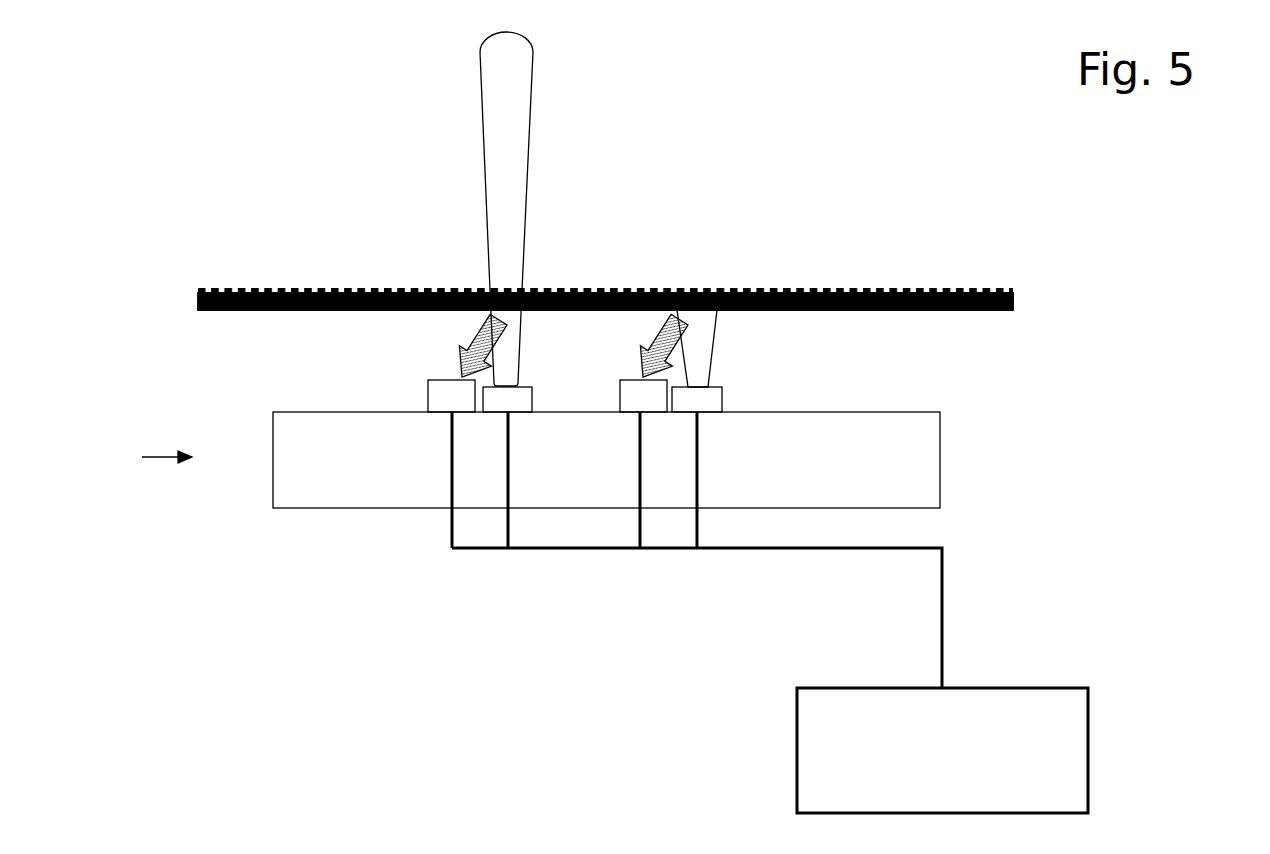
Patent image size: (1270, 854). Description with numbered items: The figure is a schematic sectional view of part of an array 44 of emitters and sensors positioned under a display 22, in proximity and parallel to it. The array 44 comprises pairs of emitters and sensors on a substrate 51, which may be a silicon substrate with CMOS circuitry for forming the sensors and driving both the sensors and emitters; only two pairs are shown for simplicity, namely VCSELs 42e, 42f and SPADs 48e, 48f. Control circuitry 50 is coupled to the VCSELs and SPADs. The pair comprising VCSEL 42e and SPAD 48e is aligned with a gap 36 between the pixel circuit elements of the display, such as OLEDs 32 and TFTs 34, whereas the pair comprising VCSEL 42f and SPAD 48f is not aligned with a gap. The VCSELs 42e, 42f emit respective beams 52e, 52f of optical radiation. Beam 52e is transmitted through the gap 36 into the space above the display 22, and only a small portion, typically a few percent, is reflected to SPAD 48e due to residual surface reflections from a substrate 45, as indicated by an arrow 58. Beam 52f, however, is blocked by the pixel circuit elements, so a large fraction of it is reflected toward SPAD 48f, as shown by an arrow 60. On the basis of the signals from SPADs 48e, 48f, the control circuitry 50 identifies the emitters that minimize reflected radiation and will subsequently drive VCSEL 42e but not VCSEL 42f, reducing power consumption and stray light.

The display 22 is at (1040, 288).
The OLEDs 32 is at (310, 283).
The TFTs 34 is at (655, 283).
The gap 36 is at (538, 290).
The substrate 45 is at (983, 310).
The array 44 is at (142, 458).
The substrate 51 is at (918, 458).
The control circuitry 50 is at (1058, 733).
The beam 52e is at (508, 210).
The beam 52f is at (698, 347).
The arrow 58 is at (467, 348).
The arrow 60 is at (663, 345).
The SPAD 48e is at (442, 402).
The SPAD 48f is at (628, 402).
The VCSEL 42e is at (498, 402).
The VCSEL 42f is at (693, 402).